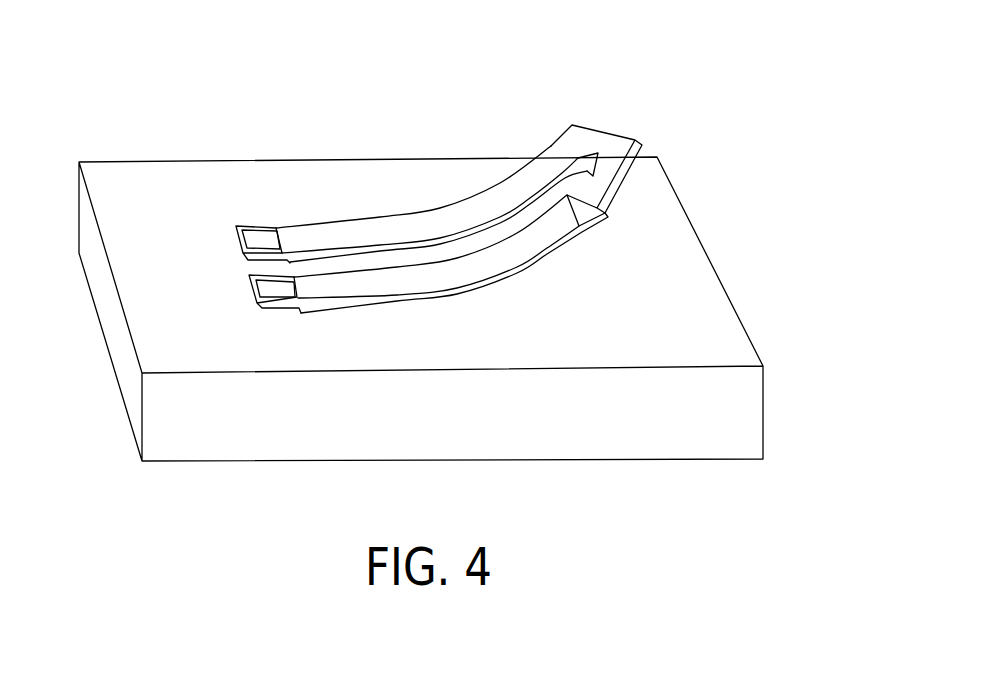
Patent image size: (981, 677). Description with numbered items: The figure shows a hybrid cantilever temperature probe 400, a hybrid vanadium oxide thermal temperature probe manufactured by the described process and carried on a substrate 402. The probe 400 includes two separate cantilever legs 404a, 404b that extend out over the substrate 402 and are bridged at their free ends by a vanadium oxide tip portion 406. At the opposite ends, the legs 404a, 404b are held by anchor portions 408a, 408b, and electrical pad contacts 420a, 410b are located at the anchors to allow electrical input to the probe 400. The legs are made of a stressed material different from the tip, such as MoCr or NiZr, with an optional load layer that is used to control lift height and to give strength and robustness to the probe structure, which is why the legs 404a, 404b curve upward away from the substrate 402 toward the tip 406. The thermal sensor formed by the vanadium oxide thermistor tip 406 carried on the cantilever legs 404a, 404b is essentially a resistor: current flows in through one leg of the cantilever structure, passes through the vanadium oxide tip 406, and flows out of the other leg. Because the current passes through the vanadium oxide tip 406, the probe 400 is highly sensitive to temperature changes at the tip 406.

The probe 400 is at (146, 84).
The substrate 402 is at (132, 263).
The leg 404a is at (397, 280).
The leg 404b is at (476, 144).
The vanadium oxide tip portion 406 is at (575, 140).
The anchor portion 408a is at (259, 311).
The anchor portion 408b is at (249, 261).
The electrical pad contact 410b is at (263, 238).
The electrical pad contact 420a is at (294, 290).